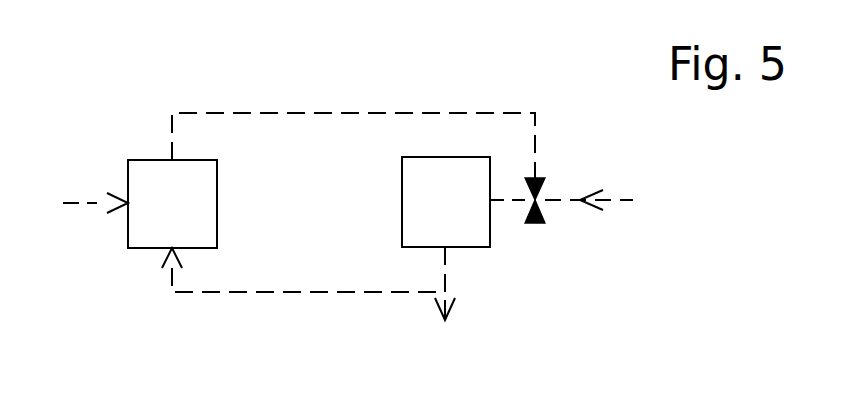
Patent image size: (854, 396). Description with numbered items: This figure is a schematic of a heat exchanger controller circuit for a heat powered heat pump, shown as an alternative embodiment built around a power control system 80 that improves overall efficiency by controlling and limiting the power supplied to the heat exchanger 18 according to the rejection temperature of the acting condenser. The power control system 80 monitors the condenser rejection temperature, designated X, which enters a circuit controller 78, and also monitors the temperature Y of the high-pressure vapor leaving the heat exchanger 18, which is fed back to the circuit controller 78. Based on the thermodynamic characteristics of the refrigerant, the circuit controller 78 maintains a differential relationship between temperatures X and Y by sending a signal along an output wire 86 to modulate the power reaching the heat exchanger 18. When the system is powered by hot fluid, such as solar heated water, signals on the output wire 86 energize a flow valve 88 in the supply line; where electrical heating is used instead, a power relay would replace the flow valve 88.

The power control system 80 is at (132, 97).
The circuit controller 78 is at (150, 162).
The output wire 86 is at (327, 112).
The heat exchanger 18 is at (422, 157).
The flow valve 88 is at (540, 192).